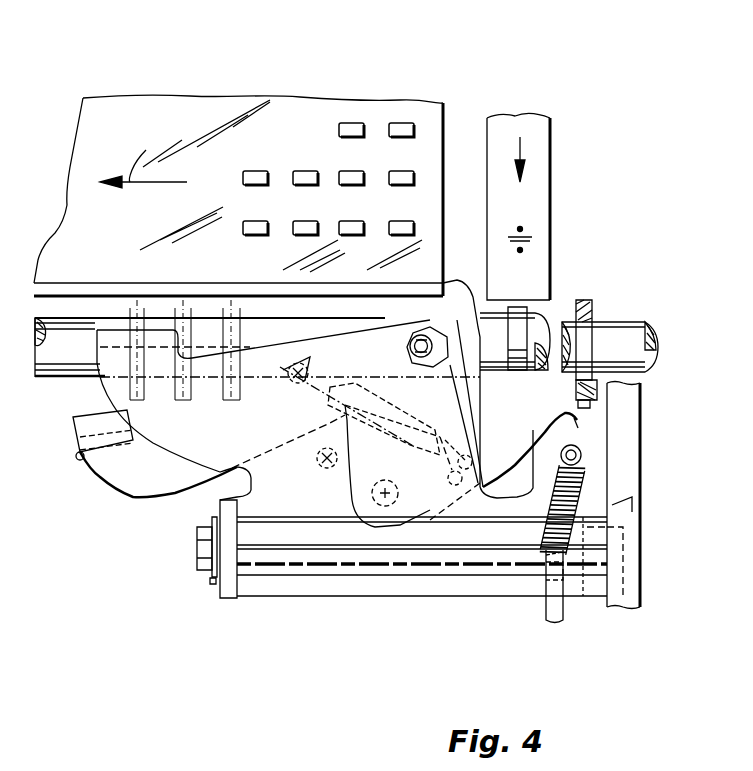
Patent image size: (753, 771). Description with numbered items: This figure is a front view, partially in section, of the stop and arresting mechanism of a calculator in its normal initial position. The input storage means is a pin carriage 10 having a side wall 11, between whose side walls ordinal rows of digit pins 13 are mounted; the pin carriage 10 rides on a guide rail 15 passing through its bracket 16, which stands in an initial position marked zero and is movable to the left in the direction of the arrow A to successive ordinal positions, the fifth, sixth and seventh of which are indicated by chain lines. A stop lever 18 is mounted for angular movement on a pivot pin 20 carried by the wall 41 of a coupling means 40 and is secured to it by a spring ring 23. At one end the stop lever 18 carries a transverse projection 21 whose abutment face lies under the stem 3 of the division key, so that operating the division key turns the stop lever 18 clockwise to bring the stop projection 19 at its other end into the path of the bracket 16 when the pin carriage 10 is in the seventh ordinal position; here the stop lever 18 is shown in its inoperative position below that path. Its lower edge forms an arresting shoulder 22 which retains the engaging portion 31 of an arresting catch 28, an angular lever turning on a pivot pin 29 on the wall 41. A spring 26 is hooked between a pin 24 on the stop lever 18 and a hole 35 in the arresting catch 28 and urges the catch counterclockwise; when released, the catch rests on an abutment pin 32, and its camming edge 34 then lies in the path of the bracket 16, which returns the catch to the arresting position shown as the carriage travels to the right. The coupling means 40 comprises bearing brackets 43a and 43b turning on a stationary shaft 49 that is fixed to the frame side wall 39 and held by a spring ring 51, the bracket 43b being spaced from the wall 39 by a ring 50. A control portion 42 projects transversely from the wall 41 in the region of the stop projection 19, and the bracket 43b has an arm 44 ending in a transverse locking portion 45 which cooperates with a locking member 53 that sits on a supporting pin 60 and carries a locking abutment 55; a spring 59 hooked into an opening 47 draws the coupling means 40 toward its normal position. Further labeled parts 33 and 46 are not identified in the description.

The pin carriage 10 is at (197, 90).
The side wall 11 is at (295, 110).
The number representing pins 13 is at (401, 128).
The stem of division key 3 is at (537, 140).
The guide rail 15 is at (53, 353).
The bracket 16 is at (470, 295).
The stop lever 18 is at (145, 482).
The stop projection 19 is at (78, 460).
The pivot pin 20 is at (418, 347).
The transverse projection 21 is at (537, 311).
The arresting shoulder 22 is at (340, 443).
The spring ring 23 is at (437, 277).
The pin 24 is at (307, 360).
The spring 26 is at (408, 423).
The arresting catch 28 is at (517, 447).
The pivot pin 29 is at (382, 507).
The engaging portion 31 is at (373, 397).
The abutment pin 32 is at (318, 468).
The pin 33 is at (463, 489).
The camming edge 34 is at (483, 420).
The hole 35 is at (463, 455).
The side wall 39 is at (627, 482).
The coupling means 40 is at (292, 606).
The wall 41 is at (248, 477).
The control portion 42 is at (100, 337).
The bearing bracket 43a is at (230, 583).
The bearing bracket 43b is at (563, 580).
The arm 44 is at (578, 430).
The transverse locking portion 45 is at (593, 387).
The rod end 46 is at (553, 620).
The opening 47 is at (550, 567).
The stationary shaft 49 is at (440, 550).
The ring 50 is at (587, 560).
The spring ring 51 is at (213, 583).
The locking member 53 is at (588, 312).
The locking abutment 55 is at (590, 413).
The spring 59 is at (577, 487).
The supporting pin 60 is at (630, 328).